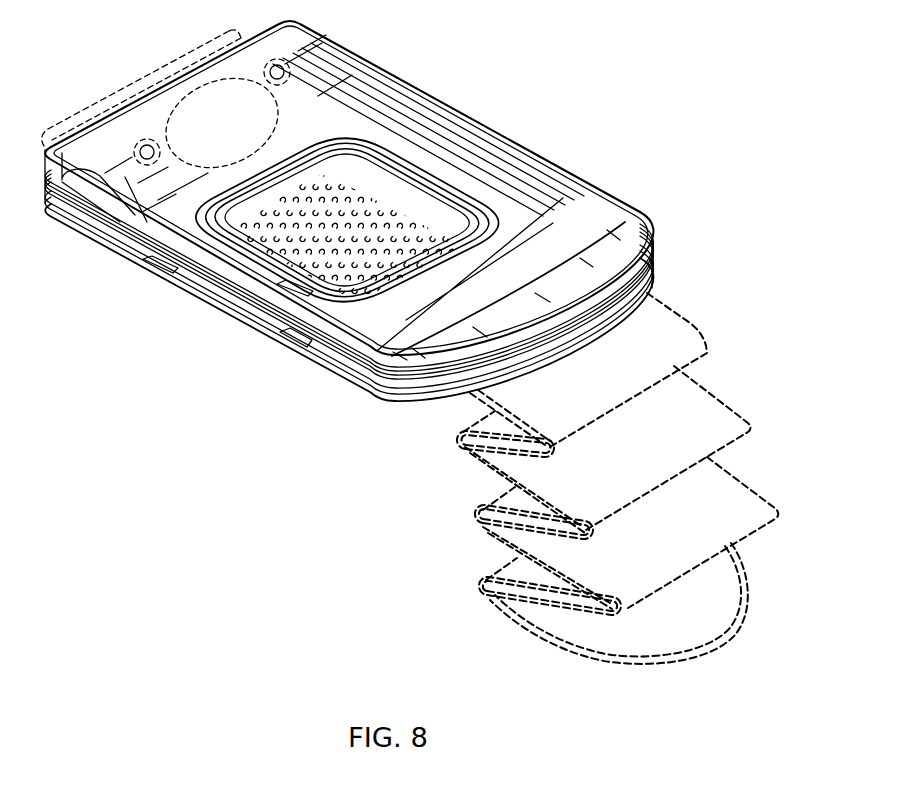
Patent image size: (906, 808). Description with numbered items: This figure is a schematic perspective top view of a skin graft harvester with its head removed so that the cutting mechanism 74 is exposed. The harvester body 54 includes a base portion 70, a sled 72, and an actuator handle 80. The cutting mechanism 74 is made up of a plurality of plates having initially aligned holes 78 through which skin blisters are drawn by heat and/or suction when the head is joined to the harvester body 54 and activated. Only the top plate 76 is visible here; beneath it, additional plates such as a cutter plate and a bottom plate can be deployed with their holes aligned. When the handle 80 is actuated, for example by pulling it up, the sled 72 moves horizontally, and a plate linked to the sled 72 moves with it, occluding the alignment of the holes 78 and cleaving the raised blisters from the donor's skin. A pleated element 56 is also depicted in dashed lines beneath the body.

The harvester body 54 is at (516, 92).
The pleated filter media bag 56 is at (692, 325).
The base portion 70 is at (312, 352).
The sled 72 is at (323, 92).
The cutting mechanism 74 is at (262, 252).
The top plate 76 is at (398, 180).
The holes 78 is at (262, 328).
The actuator handle 80 is at (592, 180).